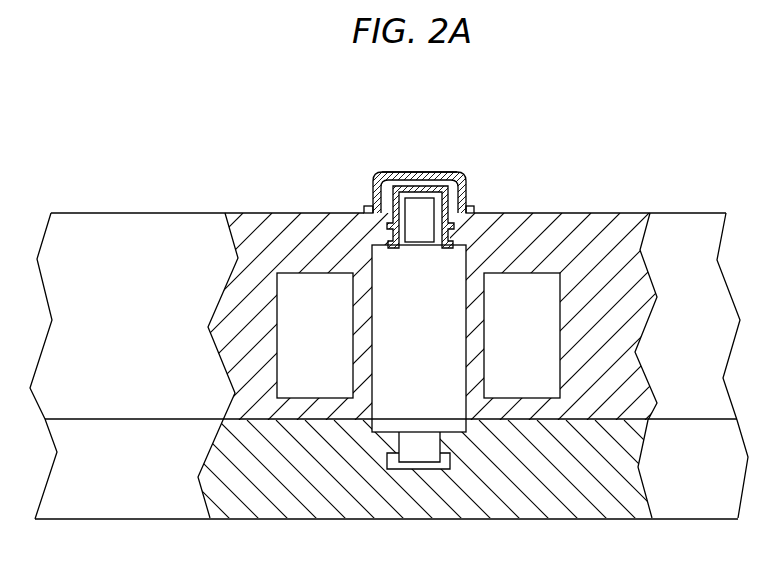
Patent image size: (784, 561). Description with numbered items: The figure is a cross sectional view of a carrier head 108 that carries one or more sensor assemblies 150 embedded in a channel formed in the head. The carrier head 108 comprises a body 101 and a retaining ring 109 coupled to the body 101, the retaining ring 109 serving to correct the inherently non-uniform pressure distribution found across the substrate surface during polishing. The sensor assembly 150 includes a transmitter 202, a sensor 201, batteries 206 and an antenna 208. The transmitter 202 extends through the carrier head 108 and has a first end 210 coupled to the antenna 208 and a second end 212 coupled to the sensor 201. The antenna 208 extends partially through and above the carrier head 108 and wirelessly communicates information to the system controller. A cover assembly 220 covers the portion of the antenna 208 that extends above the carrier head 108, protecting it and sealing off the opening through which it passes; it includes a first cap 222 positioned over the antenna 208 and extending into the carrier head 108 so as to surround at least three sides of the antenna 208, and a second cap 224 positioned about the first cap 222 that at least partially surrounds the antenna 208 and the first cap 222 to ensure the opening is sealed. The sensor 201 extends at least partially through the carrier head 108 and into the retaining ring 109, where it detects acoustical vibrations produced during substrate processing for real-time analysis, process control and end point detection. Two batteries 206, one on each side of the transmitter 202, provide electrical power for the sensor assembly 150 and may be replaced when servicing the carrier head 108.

The carrier head 108 is at (666, 84).
The body 101 is at (637, 212).
The retaining ring 109 is at (643, 478).
The sensor assembly 150 is at (512, 186).
The cover assembly 220 is at (345, 192).
The antenna 208 is at (460, 201).
The second cap 224 is at (407, 171).
The first cap 222 is at (427, 214).
The first end 210 is at (421, 243).
The transmitter 202 is at (404, 337).
The batteries 206 is at (300, 344).
The second end 212 is at (437, 418).
The sensor 201 is at (443, 440).